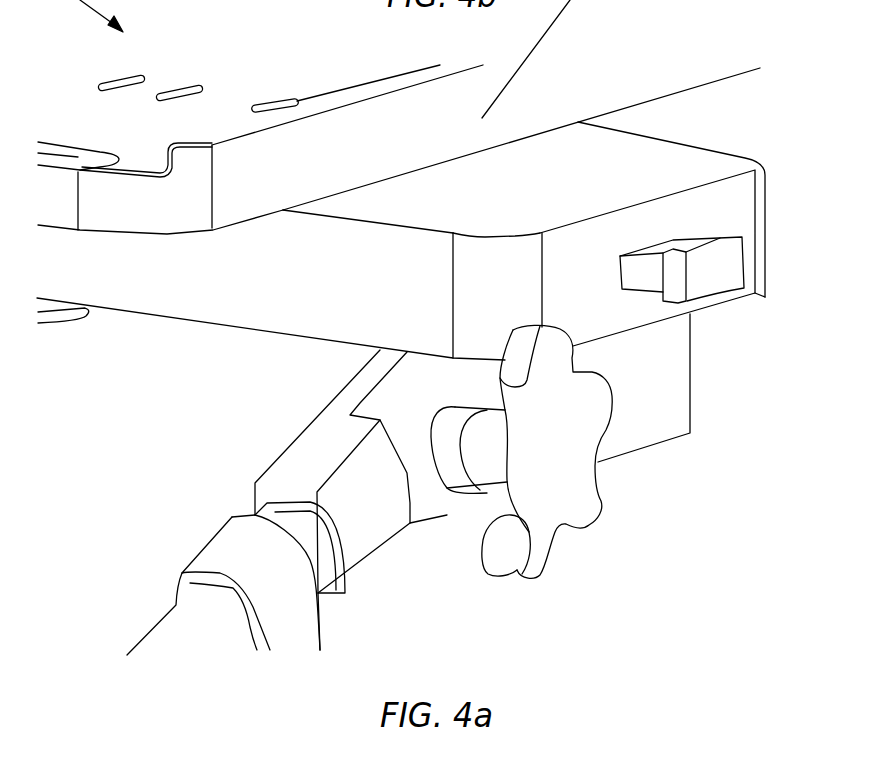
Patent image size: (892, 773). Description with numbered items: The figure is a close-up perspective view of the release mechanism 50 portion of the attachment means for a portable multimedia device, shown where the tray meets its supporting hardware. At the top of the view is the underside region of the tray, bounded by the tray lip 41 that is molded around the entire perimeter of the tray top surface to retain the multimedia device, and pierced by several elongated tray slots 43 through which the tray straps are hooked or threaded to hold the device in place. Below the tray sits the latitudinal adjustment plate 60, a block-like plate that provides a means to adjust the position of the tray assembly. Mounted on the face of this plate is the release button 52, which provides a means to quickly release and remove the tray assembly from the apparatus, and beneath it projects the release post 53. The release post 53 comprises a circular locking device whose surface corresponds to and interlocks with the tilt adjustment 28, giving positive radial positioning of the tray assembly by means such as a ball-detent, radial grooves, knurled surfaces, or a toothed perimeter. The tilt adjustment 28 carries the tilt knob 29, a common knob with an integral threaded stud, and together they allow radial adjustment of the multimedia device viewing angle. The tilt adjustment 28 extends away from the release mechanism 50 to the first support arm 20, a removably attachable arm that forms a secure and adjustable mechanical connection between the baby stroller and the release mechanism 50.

The first support arm 20 is at (178, 633).
The tilt adjustment 28 is at (327, 443).
The tilt knob 29 is at (513, 495).
The tray lip 41 is at (85, 155).
The tray slots 43 is at (272, 107).
The release mechanism 50 is at (762, 112).
The release button 52 is at (720, 265).
The release post 53 is at (660, 372).
The latitudinal adjustment plate 60 is at (737, 193).